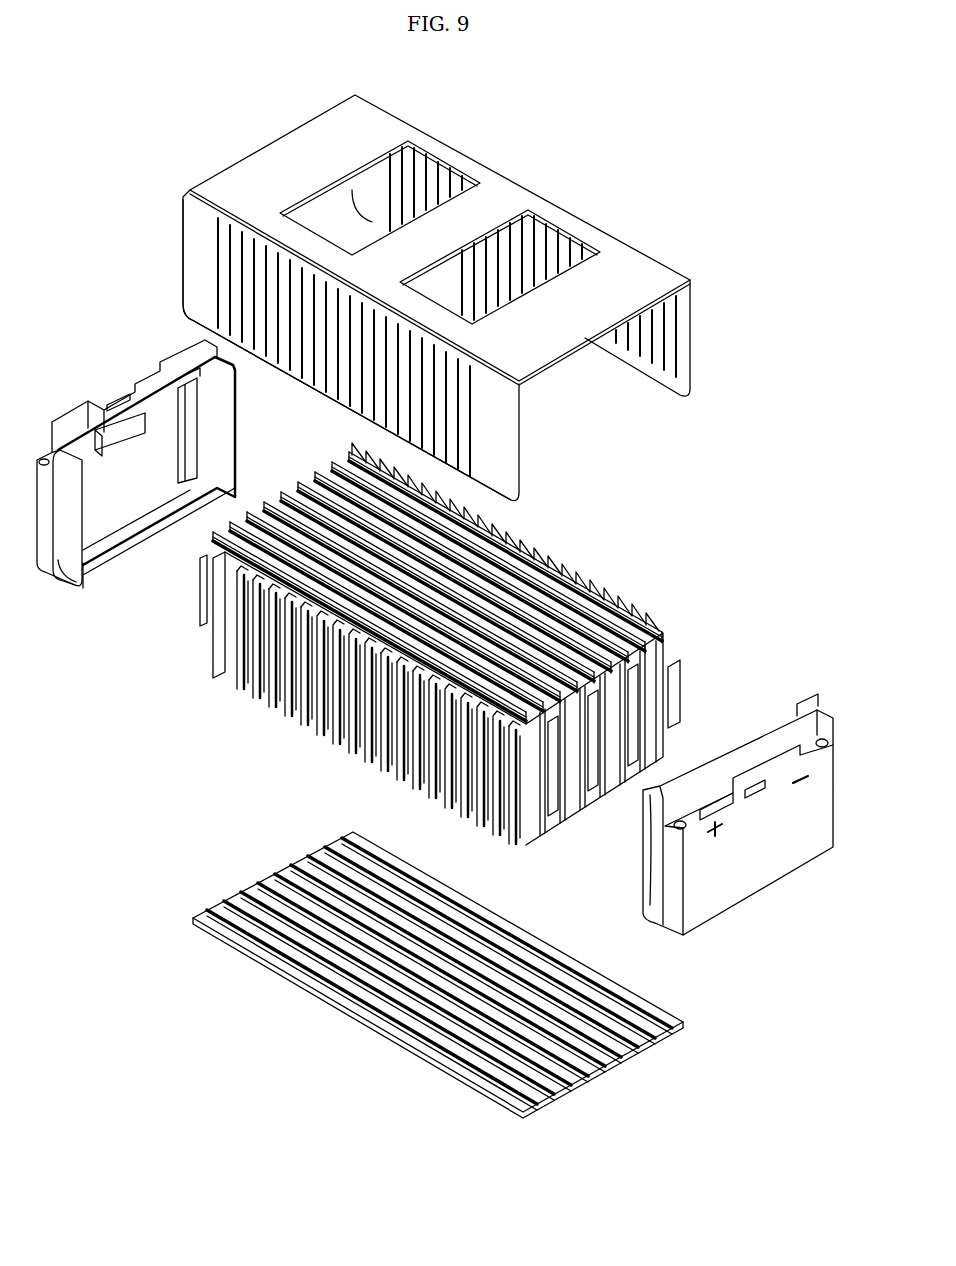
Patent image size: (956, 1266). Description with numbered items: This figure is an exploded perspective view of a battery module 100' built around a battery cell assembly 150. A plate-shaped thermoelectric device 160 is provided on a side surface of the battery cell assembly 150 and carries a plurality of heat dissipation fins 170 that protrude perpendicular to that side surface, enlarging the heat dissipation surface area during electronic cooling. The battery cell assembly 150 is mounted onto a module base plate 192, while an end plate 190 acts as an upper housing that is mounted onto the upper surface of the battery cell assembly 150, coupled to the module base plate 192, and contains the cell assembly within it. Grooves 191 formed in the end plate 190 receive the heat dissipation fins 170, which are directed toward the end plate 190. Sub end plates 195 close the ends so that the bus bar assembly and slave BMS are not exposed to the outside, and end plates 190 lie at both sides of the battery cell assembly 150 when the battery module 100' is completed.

The battery module 100' is at (436, 599).
The end plate 190 is at (276, 150).
The grooves 191 is at (218, 272).
The battery cell assembly 150 is at (618, 532).
The heat dissipation fins 170 is at (232, 680).
The thermoelectric device 160 is at (494, 826).
The sub end plate 195 is at (775, 860).
The module base plate 192 is at (270, 960).